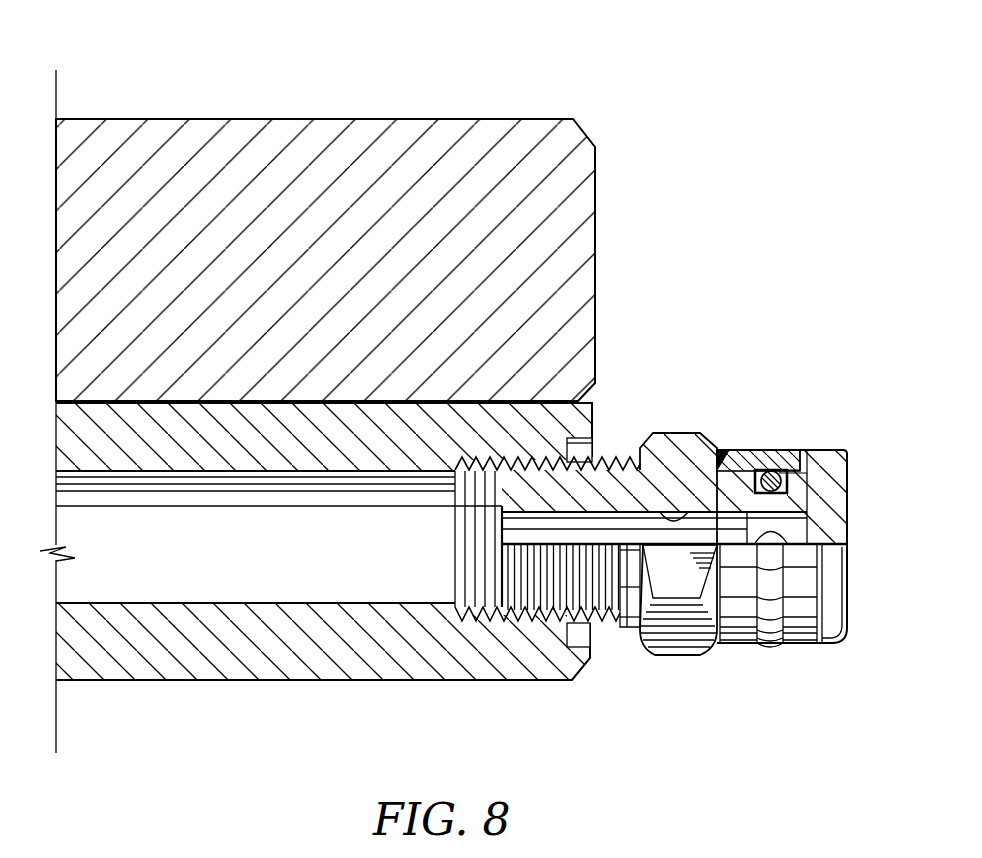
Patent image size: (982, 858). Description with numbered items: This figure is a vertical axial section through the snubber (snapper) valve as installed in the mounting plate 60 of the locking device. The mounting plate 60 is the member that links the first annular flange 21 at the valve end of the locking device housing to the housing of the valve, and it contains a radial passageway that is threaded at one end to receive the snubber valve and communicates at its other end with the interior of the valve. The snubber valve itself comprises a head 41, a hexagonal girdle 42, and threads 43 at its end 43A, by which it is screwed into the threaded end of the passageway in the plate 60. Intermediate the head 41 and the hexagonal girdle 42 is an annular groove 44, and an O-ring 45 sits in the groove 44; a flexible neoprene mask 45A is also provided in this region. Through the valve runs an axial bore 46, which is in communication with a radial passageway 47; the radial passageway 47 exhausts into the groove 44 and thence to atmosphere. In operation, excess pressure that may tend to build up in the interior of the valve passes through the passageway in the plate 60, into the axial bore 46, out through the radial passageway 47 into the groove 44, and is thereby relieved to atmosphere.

The first annular flange 21 is at (595, 228).
The mounting plate 60 is at (233, 678).
The threads 43 is at (550, 460).
The threaded end 43A is at (500, 500).
The axial bore 46 is at (660, 505).
The hexagonal girdle 42 is at (688, 432).
The radial passageway 47 is at (755, 525).
The O-ring 45 is at (785, 453).
The flexible neoprene mask 45A is at (807, 452).
The head 41 is at (847, 452).
The annular groove 44 is at (840, 489).